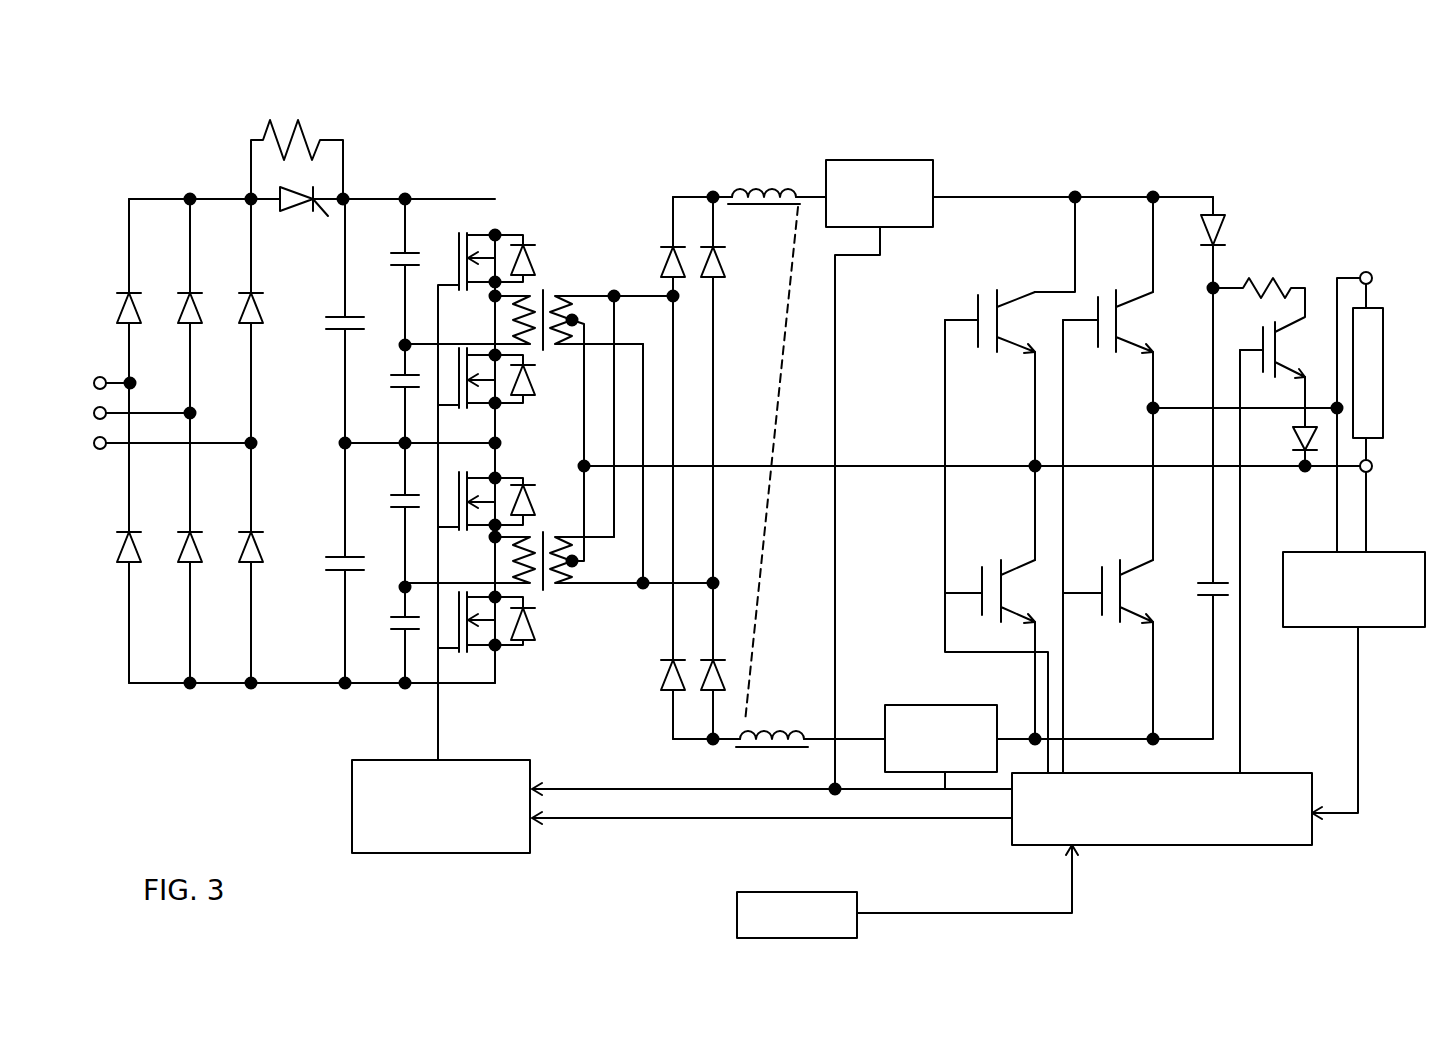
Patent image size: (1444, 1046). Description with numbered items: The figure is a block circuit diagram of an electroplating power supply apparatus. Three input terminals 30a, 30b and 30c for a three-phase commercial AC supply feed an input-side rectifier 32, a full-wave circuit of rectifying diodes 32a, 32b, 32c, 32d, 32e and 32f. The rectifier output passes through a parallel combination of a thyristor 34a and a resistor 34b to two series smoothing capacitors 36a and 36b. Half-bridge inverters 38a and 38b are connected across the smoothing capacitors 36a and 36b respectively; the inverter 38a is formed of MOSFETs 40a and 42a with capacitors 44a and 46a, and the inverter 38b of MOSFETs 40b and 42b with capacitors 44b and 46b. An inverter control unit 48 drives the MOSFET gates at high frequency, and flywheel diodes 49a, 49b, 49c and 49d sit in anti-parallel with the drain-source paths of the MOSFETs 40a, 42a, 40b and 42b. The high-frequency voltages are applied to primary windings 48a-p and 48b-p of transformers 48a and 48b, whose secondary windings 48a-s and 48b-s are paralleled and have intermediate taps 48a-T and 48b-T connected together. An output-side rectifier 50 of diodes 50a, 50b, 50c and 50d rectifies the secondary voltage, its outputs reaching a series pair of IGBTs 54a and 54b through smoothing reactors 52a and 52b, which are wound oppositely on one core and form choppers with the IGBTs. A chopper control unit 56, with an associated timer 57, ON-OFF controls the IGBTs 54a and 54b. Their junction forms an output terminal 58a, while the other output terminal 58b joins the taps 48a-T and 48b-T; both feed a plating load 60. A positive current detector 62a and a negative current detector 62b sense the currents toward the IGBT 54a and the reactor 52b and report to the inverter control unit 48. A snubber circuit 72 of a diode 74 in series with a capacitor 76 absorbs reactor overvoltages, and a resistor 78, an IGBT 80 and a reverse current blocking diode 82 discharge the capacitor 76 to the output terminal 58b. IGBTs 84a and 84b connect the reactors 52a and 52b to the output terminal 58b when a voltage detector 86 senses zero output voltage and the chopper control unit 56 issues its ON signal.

The input terminal 30a is at (134, 379).
The input terminal 30b is at (108, 418).
The input terminal 30c is at (100, 450).
The input-side rectifier 32 is at (202, 186).
The rectifying diode 32a is at (122, 305).
The rectifying diode 32b is at (183, 305).
The rectifying diode 32c is at (244, 305).
The rectifying diode 32d is at (128, 562).
The rectifying diode 32e is at (188, 562).
The rectifying diode 32f is at (248, 562).
The thyristor 34a is at (292, 210).
The resistor 34b is at (320, 118).
The smoothing capacitor 36a is at (338, 330).
The smoothing capacitor 36b is at (342, 553).
The inverter 38a is at (484, 154).
The inverter 38b is at (404, 719).
The semiconductor switching device 40a is at (464, 248).
The semiconductor switching device 40b is at (471, 488).
The semiconductor switching device 42a is at (467, 363).
The semiconductor switching device 42b is at (471, 605).
The capacitor 44a is at (400, 258).
The capacitor 44b is at (400, 500).
The capacitor 46a is at (398, 380).
The capacitor 46b is at (400, 622).
The inverter control unit 48 is at (356, 812).
The transformer 48a is at (546, 352).
The primary winding 48a-p is at (530, 294).
The secondary winding 48a-s is at (563, 294).
The intermediate tap 48a-T is at (575, 318).
The transformer 48b is at (546, 530).
The primary winding 48b-p is at (528, 586).
The secondary winding 48b-s is at (565, 586).
The intermediate tap 48b-T is at (580, 562).
The flywheel diode 49a is at (530, 262).
The flywheel diode 49b is at (531, 398).
The flywheel diode 49c is at (533, 500).
The flywheel diode 49d is at (528, 643).
The output-side rectifier 50 is at (710, 183).
The diode 50a is at (688, 284).
The diode 50b is at (720, 262).
The diode 50c is at (668, 688).
The diode 50d is at (708, 690).
The smoothing reactor 52a is at (784, 192).
The smoothing reactor 52b is at (766, 732).
The IGBT 54a is at (1121, 321).
The IGBT 54b is at (1122, 591).
The chopper control unit 56 is at (1268, 796).
The timer 57 is at (858, 932).
The output terminal 58a is at (1364, 271).
The output terminal 58b is at (1371, 473).
The plating load 60 is at (1378, 378).
The positive current detector 62a is at (898, 162).
The negative current detector 62b is at (940, 704).
The snubber circuit 72 is at (1144, 177).
The diode 74 is at (1210, 212).
The capacitor 76 is at (1208, 600).
The resistor 78 is at (1249, 282).
The IGBT 80 is at (1280, 350).
The reverse current blocking diode 82 is at (1297, 442).
The IGBT 84a is at (1000, 321).
The IGBT 84b is at (1005, 591).
The voltage detector 86 is at (1416, 612).